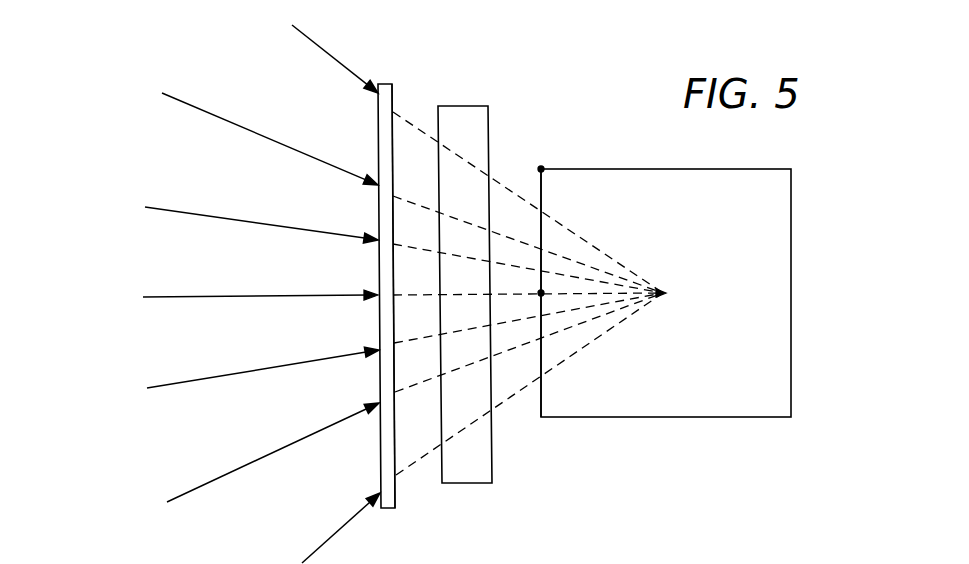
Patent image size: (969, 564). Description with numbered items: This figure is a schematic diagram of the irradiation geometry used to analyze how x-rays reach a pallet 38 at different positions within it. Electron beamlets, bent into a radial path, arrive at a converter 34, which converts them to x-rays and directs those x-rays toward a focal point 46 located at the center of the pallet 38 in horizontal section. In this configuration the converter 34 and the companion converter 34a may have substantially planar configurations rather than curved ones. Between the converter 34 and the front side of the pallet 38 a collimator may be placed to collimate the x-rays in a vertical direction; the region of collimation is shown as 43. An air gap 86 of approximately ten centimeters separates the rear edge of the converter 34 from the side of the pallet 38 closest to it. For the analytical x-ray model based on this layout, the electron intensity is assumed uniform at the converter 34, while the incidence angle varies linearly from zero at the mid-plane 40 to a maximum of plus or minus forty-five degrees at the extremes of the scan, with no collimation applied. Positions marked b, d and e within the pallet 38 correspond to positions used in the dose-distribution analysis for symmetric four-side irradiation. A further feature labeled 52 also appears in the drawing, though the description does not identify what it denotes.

The converter 34 is at (378, 138).
The converter 34a is at (395, 433).
The pallet 38 is at (758, 215).
The mid-plane 40 is at (298, 297).
The region of collimation 43 is at (463, 106).
The focal point 46 is at (666, 296).
The detector front face 52 is at (541, 197).
The air gap 86 is at (425, 273).
The position d is at (388, 84).
The position e is at (661, 169).
The position b is at (155, 297).